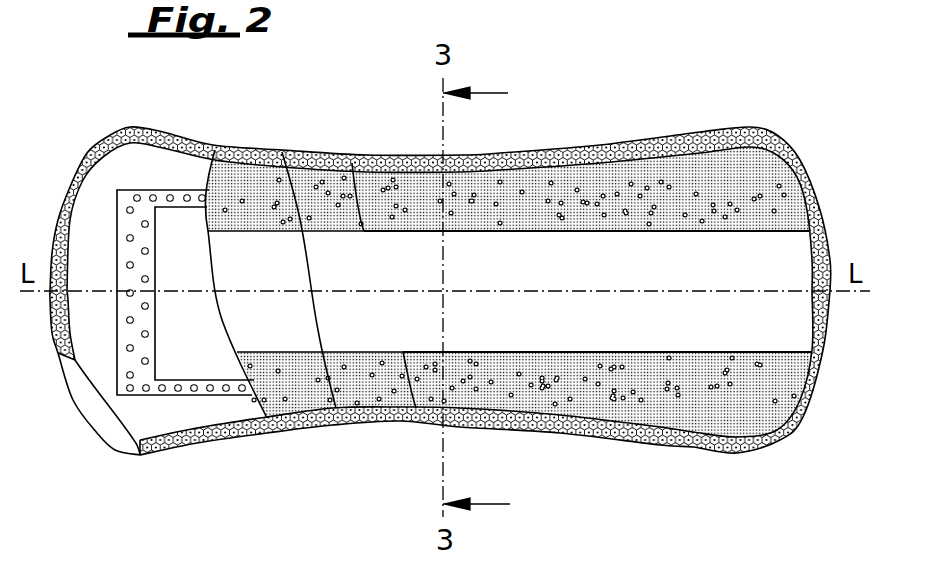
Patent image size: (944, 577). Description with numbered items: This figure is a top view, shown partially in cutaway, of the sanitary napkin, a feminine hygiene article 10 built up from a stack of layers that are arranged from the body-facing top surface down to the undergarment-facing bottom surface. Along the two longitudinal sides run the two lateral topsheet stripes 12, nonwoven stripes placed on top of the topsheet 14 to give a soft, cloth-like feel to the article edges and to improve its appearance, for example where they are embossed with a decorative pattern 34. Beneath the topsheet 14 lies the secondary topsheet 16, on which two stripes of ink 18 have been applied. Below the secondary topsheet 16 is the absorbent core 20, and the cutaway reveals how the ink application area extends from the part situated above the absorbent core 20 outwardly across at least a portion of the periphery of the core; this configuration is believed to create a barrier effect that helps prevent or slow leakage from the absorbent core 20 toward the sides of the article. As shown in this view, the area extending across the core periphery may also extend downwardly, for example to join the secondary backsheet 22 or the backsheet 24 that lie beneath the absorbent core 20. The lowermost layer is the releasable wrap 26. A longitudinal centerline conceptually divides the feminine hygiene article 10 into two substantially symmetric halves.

The feminine hygiene article 10 is at (753, 490).
The lateral topsheet stripes 12 is at (673, 175).
The topsheet 14 is at (370, 279).
The secondary topsheet 16 is at (281, 277).
The stripes of ink 18 is at (263, 180).
The absorbent core 20 is at (210, 370).
The secondary backsheet 22 is at (125, 393).
The backsheet 24 is at (100, 198).
The releasable wrap 26 is at (98, 415).
The decorative pattern 34 is at (612, 183).